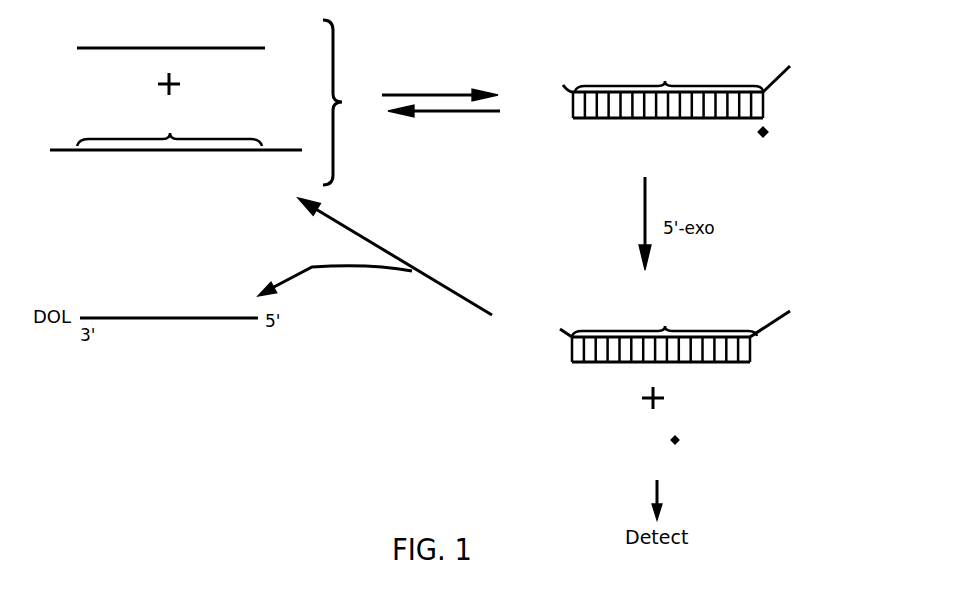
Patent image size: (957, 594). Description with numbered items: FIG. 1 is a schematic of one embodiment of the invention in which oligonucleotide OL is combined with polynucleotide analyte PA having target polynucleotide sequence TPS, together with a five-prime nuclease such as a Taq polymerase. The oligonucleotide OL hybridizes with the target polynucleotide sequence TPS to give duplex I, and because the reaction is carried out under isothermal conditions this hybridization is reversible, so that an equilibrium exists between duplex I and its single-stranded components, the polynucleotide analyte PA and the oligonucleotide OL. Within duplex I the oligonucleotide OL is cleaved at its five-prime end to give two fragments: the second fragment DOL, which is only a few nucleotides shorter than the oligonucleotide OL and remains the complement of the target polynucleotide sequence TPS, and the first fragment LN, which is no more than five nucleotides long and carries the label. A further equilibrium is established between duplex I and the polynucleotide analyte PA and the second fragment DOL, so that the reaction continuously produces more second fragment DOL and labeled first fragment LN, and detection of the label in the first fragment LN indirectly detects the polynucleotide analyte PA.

The oligonucleotide OL is at (162, 53).
The polynucleotide analyte PA is at (172, 157).
The target polynucleotide sequence TPS is at (169, 127).
The duplex I is at (661, 106).
The second fragment DOL is at (669, 339).
The first fragment LN is at (662, 450).